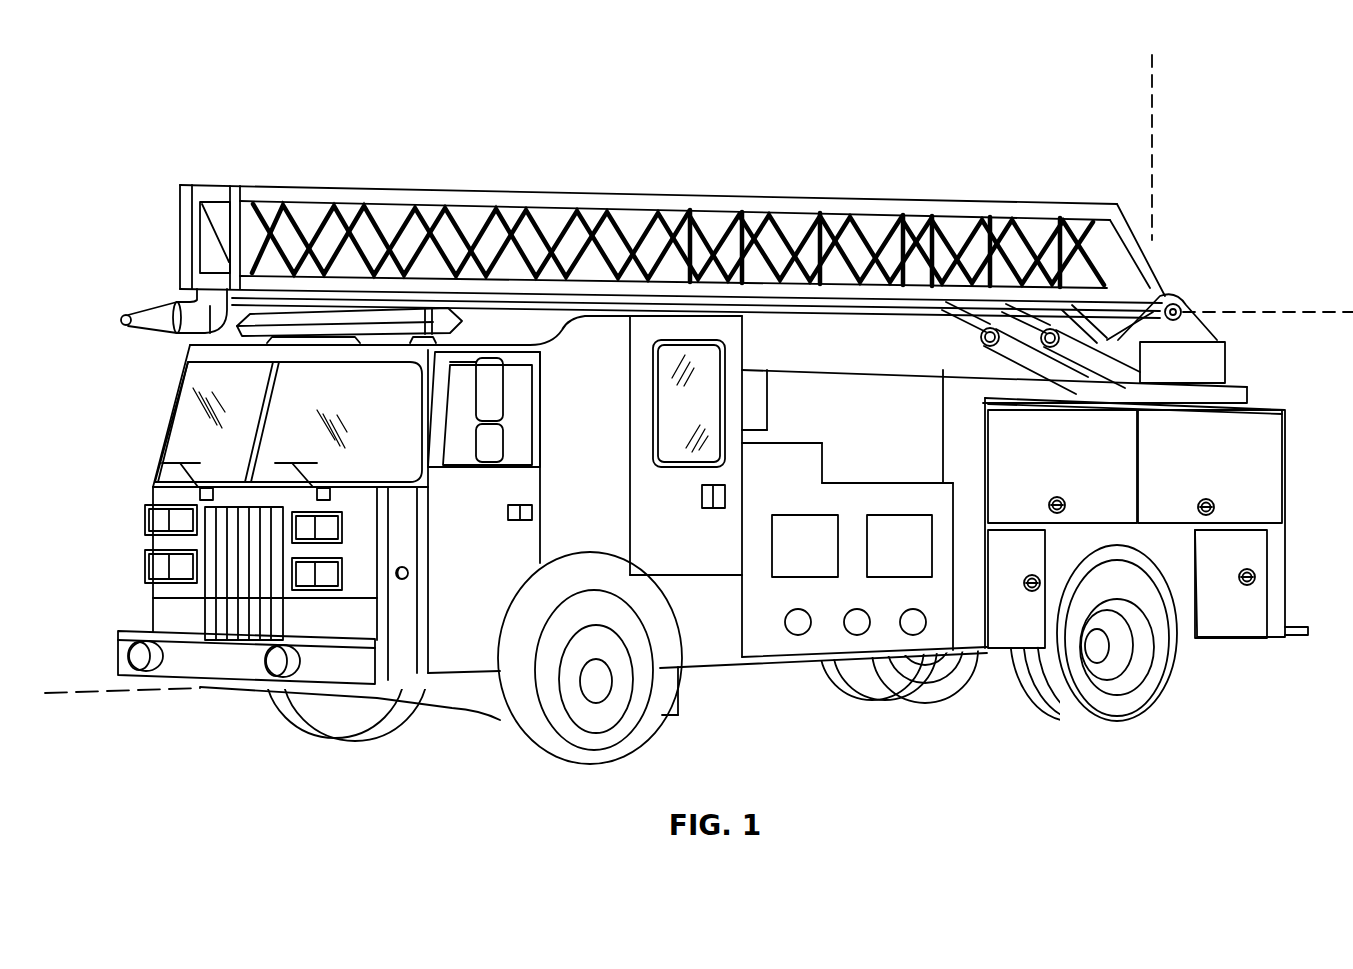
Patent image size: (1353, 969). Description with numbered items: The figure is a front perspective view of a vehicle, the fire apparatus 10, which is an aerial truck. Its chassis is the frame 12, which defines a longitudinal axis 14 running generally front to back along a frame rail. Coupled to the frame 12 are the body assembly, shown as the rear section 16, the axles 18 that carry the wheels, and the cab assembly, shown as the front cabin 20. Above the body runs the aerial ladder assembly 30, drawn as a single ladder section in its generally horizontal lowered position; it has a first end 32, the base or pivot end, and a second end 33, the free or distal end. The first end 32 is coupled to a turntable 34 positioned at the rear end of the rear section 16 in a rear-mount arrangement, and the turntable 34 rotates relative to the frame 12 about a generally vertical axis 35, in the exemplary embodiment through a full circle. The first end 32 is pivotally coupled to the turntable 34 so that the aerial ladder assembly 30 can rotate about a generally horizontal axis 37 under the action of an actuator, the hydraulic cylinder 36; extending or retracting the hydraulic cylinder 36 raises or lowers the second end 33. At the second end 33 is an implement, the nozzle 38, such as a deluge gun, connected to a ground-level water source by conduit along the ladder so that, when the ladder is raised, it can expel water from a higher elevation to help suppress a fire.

The fire apparatus 10 is at (1288, 758).
The frame 12 is at (692, 652).
The longitudinal axis 14 is at (118, 696).
The rear section 16 is at (1268, 466).
The axles 18 is at (600, 752).
The front cabin 20 is at (408, 690).
The aerial ladder assembly 30 is at (603, 162).
The first end 32 is at (1105, 155).
The second end 33 is at (246, 158).
The turntable 34 is at (1210, 363).
The vertical axis 35 is at (1160, 160).
The hydraulic cylinder 36 is at (937, 328).
The horizontal axis 37 is at (1272, 311).
The nozzle 38 is at (138, 339).